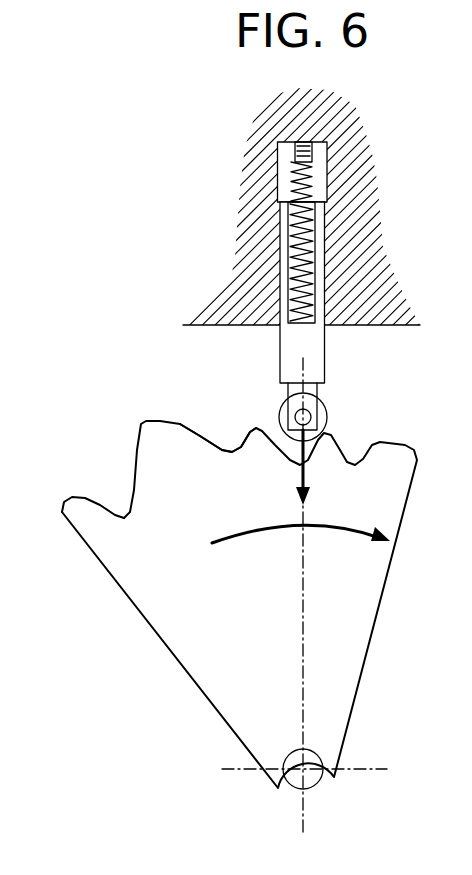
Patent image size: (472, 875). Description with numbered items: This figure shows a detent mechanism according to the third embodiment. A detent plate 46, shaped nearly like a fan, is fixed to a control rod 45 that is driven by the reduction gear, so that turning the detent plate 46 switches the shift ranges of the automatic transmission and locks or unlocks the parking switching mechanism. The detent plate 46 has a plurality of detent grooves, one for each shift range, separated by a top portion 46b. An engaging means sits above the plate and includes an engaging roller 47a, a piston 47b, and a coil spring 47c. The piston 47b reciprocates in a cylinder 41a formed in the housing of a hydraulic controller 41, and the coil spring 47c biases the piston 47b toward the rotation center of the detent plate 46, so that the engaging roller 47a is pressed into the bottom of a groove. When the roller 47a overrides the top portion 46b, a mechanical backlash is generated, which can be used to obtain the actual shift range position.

The hydraulic controller 41 is at (363, 283).
The cylinder 41a is at (322, 245).
The control rod 45 is at (295, 776).
The detent plate 46 is at (160, 605).
The top portion 46b is at (142, 422).
The engaging roller 47a is at (325, 412).
The piston 47b is at (293, 344).
The coil spring 47c is at (318, 171).